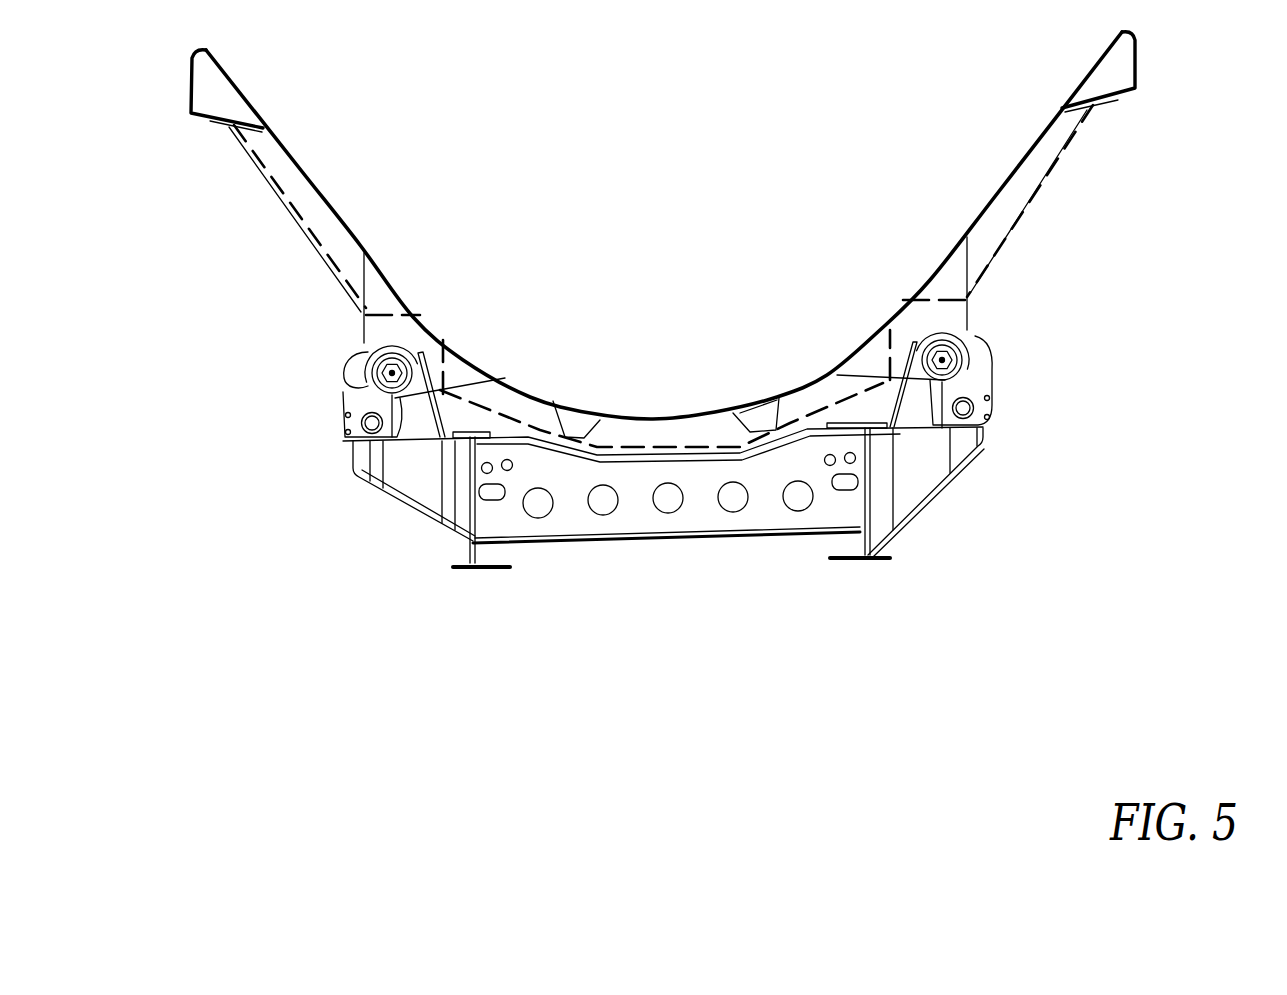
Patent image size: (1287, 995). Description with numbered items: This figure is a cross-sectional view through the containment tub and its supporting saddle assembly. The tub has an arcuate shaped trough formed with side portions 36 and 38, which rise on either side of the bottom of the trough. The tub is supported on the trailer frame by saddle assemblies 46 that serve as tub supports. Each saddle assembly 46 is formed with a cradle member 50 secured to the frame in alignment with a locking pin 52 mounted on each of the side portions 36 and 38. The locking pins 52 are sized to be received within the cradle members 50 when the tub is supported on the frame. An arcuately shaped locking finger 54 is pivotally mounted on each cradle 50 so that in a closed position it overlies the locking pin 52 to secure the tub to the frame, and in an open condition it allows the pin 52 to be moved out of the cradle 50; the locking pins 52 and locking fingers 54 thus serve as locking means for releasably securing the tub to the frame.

The side portion 36 is at (295, 220).
The side portion 38 is at (1023, 218).
The saddle assembly 46 is at (393, 440).
The cradle member 50 is at (368, 390).
The locking pin 52 is at (375, 372).
The locking finger 54 is at (343, 370).